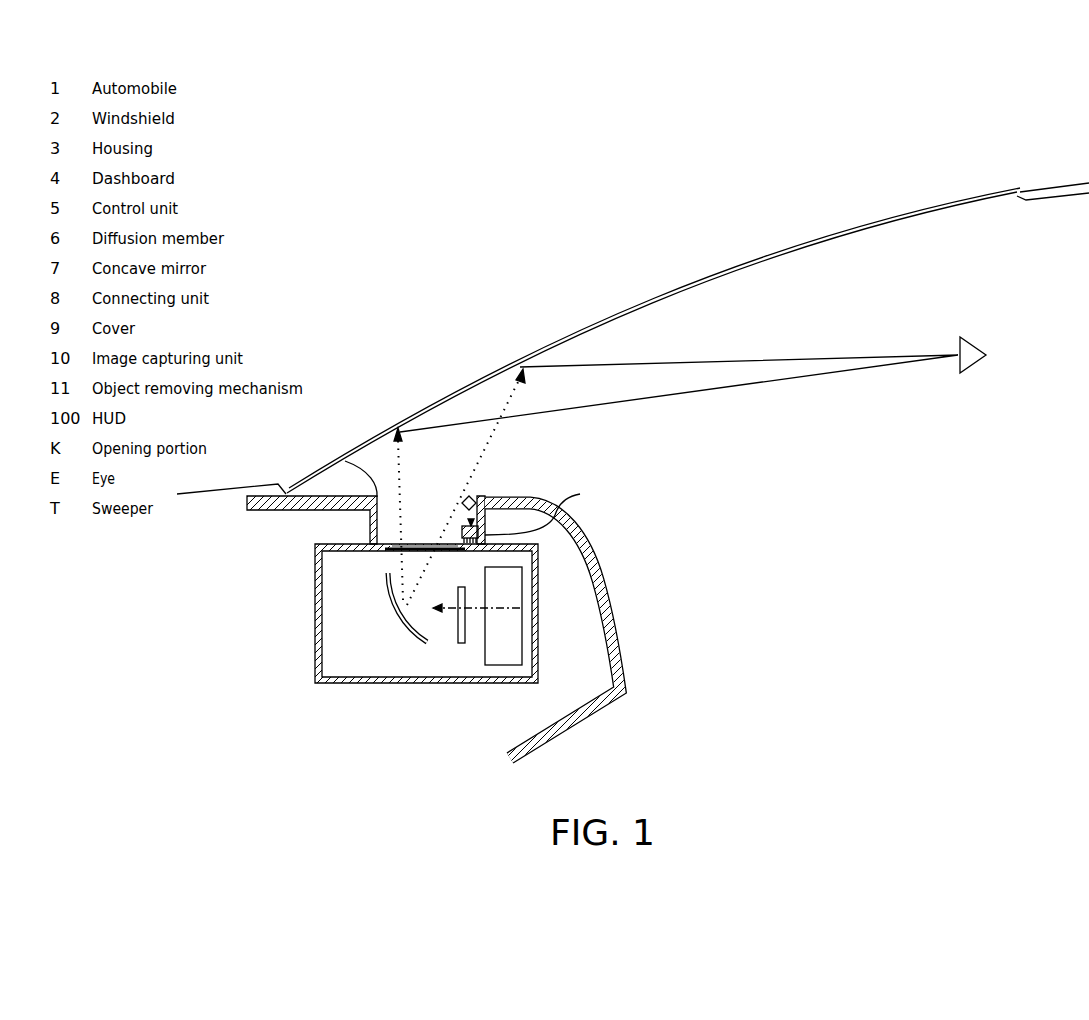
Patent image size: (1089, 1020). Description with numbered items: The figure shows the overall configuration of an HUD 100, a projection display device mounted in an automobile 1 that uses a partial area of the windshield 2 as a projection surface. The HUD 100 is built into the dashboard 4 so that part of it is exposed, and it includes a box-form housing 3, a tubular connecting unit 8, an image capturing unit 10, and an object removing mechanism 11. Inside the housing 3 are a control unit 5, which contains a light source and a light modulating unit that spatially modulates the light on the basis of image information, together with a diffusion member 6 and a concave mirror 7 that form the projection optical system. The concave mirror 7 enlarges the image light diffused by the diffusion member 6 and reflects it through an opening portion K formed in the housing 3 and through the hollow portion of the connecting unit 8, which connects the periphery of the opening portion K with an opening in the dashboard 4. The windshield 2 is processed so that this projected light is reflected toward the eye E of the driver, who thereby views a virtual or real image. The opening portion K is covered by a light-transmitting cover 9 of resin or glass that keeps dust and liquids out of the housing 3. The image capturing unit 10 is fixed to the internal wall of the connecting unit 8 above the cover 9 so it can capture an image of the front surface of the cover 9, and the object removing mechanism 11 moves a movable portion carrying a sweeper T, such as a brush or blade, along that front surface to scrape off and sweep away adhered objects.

The automobile 1 is at (724, 172).
The windshield 2 is at (633, 310).
The housing 3 is at (315, 600).
The dashboard 4 is at (603, 512).
The control unit 5 is at (500, 667).
The diffusion member 6 is at (462, 645).
The concave mirror 7 is at (407, 628).
The connecting unit 8 is at (340, 457).
The cover 9 is at (417, 547).
The image capturing unit 10 is at (475, 493).
The object removing mechanism 11 is at (485, 520).
The HUD 100 is at (304, 661).
The opening portion K is at (398, 547).
The eye E is at (988, 347).
The sweeper T is at (580, 494).